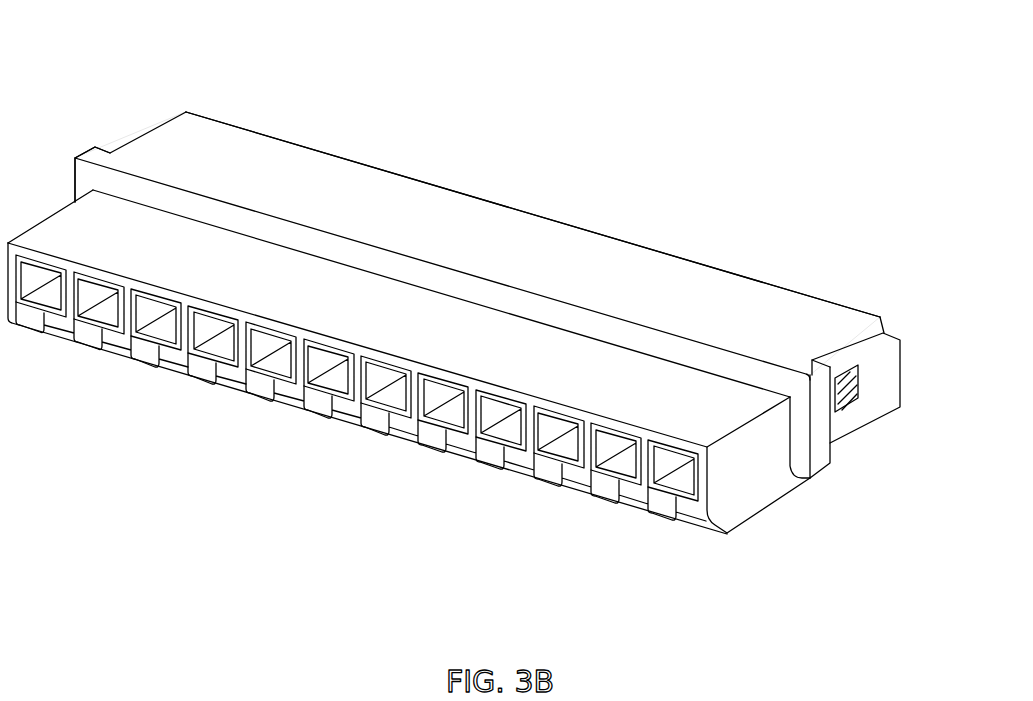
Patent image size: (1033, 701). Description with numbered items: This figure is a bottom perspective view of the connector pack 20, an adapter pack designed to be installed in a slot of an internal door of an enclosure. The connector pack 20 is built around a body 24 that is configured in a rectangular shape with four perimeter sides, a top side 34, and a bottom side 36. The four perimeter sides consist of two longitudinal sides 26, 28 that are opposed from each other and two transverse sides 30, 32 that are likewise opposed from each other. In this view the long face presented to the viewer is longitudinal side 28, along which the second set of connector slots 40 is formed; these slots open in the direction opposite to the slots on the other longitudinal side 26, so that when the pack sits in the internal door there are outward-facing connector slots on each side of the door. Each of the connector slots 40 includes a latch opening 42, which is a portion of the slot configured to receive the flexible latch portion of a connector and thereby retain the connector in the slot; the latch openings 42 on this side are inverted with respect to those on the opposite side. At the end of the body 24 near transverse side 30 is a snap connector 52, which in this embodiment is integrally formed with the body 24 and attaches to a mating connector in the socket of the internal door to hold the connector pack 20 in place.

The connector pack 20 is at (231, 75).
The body 24 is at (470, 220).
The longitudinal side 26 is at (585, 228).
The longitudinal side 28 is at (150, 365).
The transverse side 30 is at (742, 498).
The transverse side 32 is at (50, 212).
The top side 34 is at (360, 203).
The bottom side 36 is at (783, 502).
The second set of connector slots 40 is at (417, 440).
The latch opening 42 is at (227, 390).
The snap connector 52 is at (858, 382).